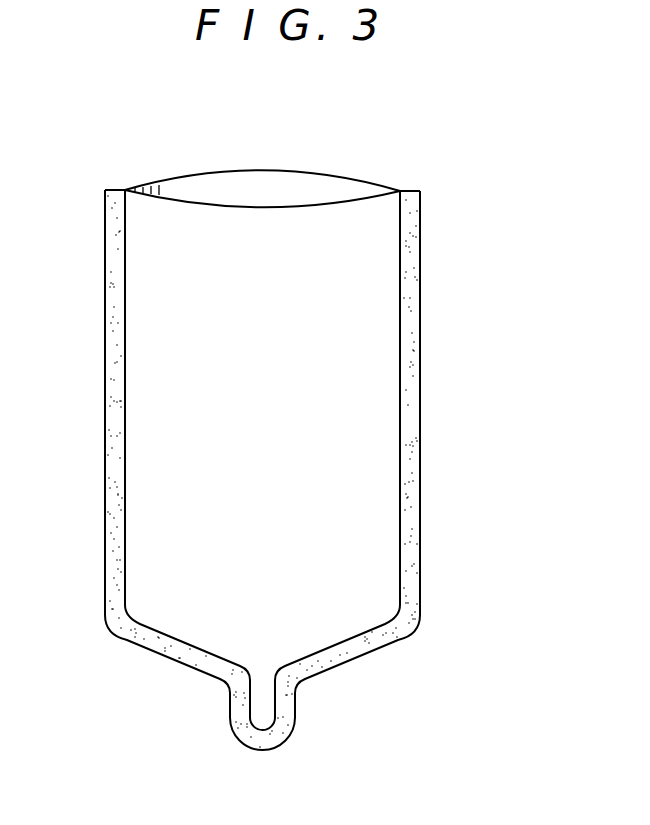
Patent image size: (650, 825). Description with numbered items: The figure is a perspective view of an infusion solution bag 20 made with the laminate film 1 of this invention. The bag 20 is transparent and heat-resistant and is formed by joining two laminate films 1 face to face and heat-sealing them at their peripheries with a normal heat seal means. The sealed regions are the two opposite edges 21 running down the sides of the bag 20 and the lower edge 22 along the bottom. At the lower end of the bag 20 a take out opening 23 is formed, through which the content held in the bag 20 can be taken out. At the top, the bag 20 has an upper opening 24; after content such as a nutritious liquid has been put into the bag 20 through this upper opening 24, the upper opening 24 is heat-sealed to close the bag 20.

The laminate film 1 is at (343, 202).
The infusion solution bag 20 is at (273, 498).
The opposite edges 21 is at (113, 430).
The lower edge 22 is at (170, 648).
The take out opening 23 is at (262, 713).
The upper opening 24 is at (257, 185).